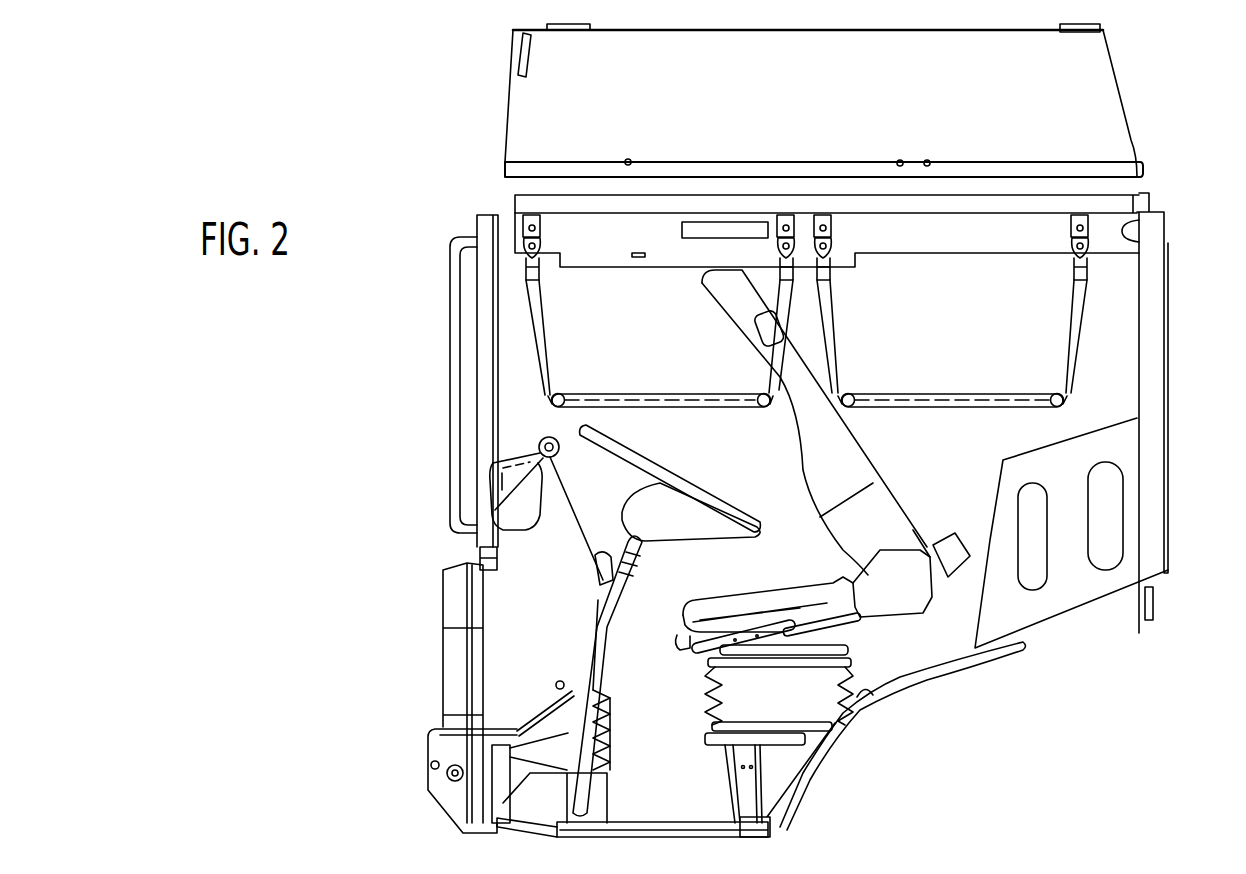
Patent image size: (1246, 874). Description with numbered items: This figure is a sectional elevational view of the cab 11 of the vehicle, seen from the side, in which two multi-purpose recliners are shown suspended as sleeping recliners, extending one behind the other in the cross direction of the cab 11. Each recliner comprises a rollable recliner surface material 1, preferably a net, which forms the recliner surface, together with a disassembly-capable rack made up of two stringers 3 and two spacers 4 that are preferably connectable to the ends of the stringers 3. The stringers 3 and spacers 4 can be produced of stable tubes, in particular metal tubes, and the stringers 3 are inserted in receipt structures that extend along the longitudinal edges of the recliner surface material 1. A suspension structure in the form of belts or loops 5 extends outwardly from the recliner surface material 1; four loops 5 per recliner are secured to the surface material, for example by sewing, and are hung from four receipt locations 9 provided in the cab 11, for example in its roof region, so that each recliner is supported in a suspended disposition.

The recliner surface material 1 is at (608, 395).
The stringers 3 is at (553, 405).
The spacers 4 is at (640, 395).
The loops 5 is at (537, 303).
The receipt locations 9 is at (521, 233).
The cab 11 is at (1122, 277).